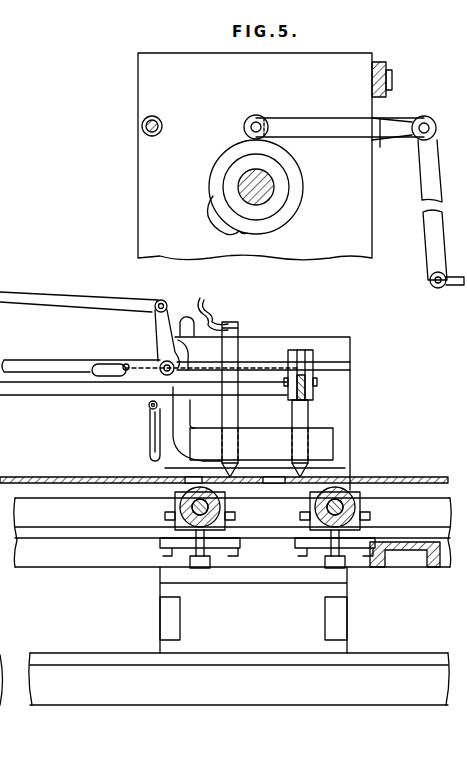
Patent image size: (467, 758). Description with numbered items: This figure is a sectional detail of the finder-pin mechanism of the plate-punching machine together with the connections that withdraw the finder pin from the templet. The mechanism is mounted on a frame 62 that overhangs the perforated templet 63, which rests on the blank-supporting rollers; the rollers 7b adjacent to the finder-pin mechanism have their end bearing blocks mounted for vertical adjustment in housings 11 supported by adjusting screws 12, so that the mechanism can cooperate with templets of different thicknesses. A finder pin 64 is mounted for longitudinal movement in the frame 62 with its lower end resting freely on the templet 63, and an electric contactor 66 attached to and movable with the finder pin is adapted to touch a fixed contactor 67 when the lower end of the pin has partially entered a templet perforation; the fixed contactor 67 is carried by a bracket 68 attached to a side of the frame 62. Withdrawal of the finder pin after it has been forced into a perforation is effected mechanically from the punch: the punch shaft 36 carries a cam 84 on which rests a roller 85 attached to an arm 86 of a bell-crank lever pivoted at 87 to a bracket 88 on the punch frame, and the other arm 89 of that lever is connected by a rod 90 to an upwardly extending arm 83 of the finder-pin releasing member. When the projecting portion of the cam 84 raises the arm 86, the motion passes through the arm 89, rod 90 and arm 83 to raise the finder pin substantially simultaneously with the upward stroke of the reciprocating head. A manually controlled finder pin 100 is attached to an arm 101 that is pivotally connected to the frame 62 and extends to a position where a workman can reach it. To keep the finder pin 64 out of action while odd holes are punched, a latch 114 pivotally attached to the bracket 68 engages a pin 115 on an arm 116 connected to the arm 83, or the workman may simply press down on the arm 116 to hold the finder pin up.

The roller 7b is at (180, 500).
The housing 11 is at (165, 522).
The adjusting screw 12 is at (200, 570).
The punch shaft 36 is at (243, 176).
The frame 62 is at (318, 432).
The perforated templet 63 is at (432, 477).
The finder pin 64 is at (170, 464).
The electric contactor 66 is at (210, 303).
The fixed contactor 67 is at (190, 320).
The bracket 68 is at (172, 418).
The arm 83 is at (158, 331).
The cam 84 is at (212, 208).
The roller 85 is at (256, 115).
The arm 86 is at (320, 119).
The pivot 87 is at (427, 117).
The bracket 88 is at (391, 150).
The arm 89 is at (428, 229).
The rod 90 is at (444, 289).
The manually controlled finder pin 100 is at (330, 470).
The arm 101 is at (300, 352).
The latch 114 is at (150, 437).
The pin 115 is at (122, 366).
The arm 116 is at (105, 377).